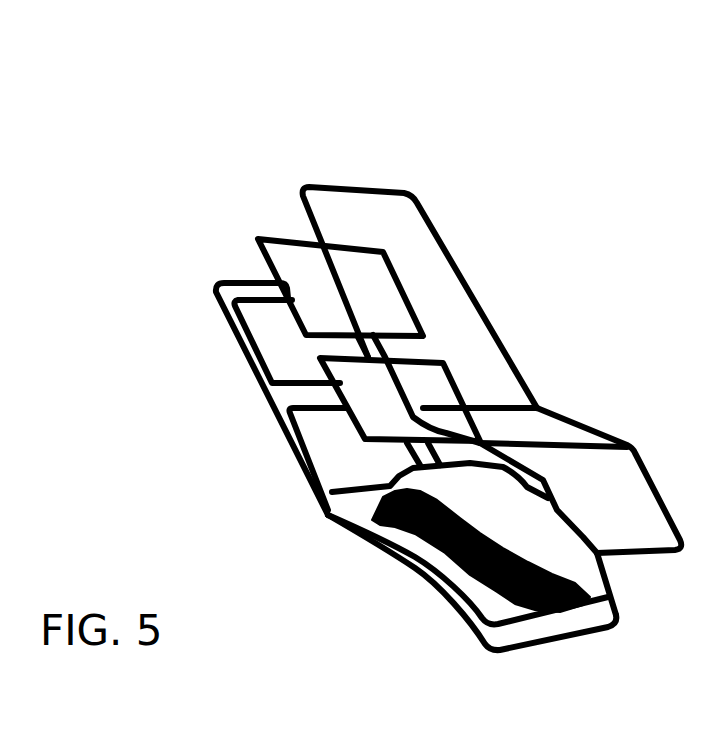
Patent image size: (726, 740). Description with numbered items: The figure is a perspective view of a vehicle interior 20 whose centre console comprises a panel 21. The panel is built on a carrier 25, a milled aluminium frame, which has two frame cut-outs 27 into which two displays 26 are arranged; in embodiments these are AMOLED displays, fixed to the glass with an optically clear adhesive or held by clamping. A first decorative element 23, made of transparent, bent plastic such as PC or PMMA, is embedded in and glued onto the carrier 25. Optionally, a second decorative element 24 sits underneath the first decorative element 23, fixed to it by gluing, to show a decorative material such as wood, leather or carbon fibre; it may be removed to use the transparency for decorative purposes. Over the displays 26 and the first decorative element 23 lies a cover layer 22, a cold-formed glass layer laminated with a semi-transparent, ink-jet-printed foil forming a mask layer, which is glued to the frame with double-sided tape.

The vehicle interior 20 is at (274, 90).
The panel 21 is at (467, 242).
The cover layer 22 is at (471, 334).
The first decorative element 23 is at (605, 572).
The second decorative element 24 is at (622, 627).
The carrier 25 is at (545, 643).
The displays 26 is at (240, 313).
The frame cut-outs 27 is at (270, 358).